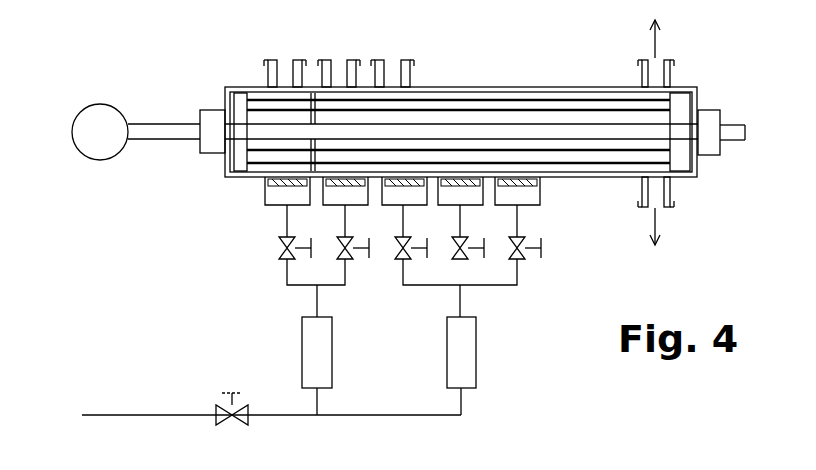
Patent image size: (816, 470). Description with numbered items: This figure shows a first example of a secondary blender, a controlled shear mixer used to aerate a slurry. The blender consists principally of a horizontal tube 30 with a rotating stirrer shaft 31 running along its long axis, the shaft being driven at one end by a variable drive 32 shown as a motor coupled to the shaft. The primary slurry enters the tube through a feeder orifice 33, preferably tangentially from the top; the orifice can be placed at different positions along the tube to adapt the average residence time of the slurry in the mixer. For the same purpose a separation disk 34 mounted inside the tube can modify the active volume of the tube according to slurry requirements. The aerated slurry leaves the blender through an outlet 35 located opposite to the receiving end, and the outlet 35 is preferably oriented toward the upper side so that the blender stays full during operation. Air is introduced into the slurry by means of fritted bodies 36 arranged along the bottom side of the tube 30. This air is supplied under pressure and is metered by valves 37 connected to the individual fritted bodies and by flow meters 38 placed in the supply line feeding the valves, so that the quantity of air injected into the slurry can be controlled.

The horizontal tube 30 is at (433, 88).
The rotating stirrer shaft 31 is at (600, 132).
The variable drive 32 is at (96, 160).
The feeder orifice 33 is at (300, 100).
The separation disk 34 is at (297, 152).
The outlet 35 is at (660, 52).
The fritted bodies 36 is at (525, 188).
The valves 37 is at (283, 250).
The flow meters 38 is at (332, 372).